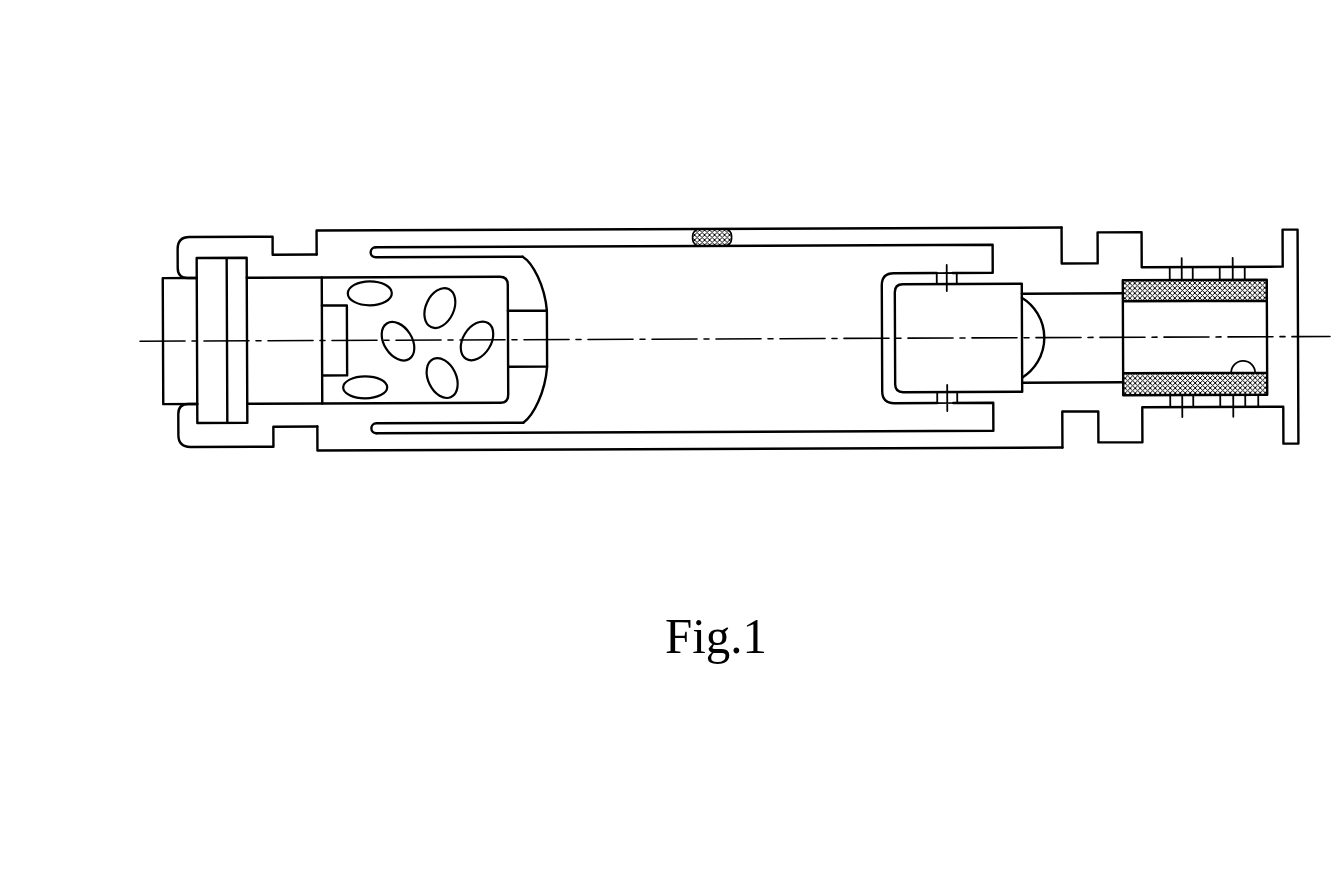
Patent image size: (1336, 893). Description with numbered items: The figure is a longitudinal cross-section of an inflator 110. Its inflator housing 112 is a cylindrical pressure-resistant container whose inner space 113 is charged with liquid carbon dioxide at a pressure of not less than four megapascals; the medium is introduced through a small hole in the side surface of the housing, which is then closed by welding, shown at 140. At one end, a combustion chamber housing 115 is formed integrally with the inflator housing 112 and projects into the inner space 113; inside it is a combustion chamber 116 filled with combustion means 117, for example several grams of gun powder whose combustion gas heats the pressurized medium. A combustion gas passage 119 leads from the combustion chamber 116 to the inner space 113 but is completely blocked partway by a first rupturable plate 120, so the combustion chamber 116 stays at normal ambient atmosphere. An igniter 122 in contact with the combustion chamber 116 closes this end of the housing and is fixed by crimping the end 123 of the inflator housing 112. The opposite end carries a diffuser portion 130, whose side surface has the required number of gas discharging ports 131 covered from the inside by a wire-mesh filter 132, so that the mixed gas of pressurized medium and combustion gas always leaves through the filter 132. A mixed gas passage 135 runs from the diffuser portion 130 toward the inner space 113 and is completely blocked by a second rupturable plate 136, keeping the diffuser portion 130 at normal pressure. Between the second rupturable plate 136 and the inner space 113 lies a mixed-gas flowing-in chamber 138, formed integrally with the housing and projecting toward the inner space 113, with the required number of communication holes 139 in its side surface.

The inflator 110 is at (611, 223).
The inflator housing 112 is at (780, 438).
The inner space 113 is at (732, 311).
The combustion chamber housing 115 is at (516, 410).
The combustion chamber 116 is at (406, 378).
The combustion means 117 is at (437, 302).
The combustion gas passage 119 is at (521, 320).
The first rupturable plate 120 is at (533, 327).
The igniter 122 is at (272, 378).
The end of the inflator housing 123 is at (188, 258).
The diffuser portion 130 is at (1216, 264).
The gas discharging ports 131 is at (1177, 404).
The filter 132 is at (1261, 404).
The mixed gas passage 135 is at (1078, 313).
The second rupturable plate 136 is at (1047, 355).
The mixed-gas flowing-in chamber 138 is at (979, 332).
The communication holes 139 is at (940, 275).
The weld closing the small hole 140 is at (710, 228).